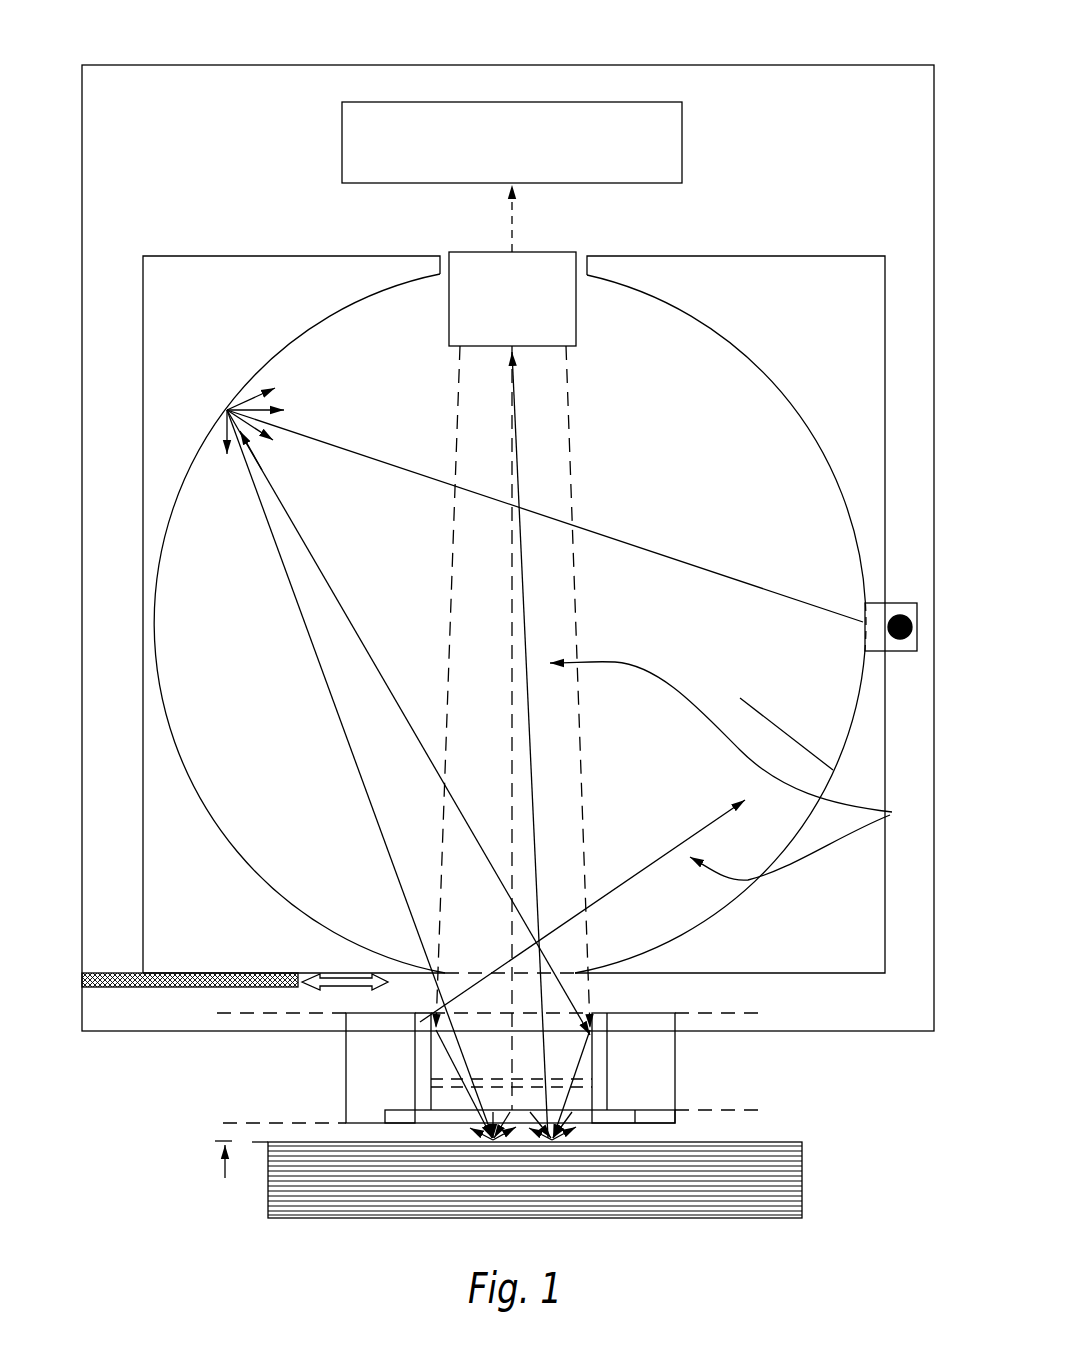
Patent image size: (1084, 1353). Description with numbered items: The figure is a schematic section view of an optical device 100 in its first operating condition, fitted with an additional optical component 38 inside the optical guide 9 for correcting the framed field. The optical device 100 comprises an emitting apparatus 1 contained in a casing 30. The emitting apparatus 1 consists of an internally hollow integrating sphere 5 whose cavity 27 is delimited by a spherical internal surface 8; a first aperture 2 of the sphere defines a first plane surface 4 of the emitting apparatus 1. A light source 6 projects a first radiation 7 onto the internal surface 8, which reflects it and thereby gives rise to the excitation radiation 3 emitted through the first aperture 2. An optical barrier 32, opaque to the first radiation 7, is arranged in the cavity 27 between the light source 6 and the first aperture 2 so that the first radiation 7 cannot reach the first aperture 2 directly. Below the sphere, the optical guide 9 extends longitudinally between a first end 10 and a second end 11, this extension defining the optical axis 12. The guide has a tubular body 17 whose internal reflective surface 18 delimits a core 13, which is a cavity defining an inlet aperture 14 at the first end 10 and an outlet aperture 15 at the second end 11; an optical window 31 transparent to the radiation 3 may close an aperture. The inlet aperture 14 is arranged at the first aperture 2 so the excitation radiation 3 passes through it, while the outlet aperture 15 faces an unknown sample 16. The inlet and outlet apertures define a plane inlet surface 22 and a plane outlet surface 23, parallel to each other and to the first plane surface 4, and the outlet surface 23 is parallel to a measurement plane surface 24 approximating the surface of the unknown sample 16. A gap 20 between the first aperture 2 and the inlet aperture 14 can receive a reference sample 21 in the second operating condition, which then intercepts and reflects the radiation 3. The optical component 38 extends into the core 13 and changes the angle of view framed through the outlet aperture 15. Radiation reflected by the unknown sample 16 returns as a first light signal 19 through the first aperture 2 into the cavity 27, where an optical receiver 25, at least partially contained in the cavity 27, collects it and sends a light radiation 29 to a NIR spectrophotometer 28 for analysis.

The optical device 100 is at (505, 62).
The emitting apparatus 1 is at (880, 253).
The first aperture 2 is at (405, 1004).
The excitation radiation 3 is at (352, 662).
The first plane surface 4 is at (580, 970).
The integrating sphere 5 is at (154, 613).
The light source 6 is at (898, 606).
The first radiation 7 is at (736, 566).
The internal surface 8 is at (262, 366).
The optical guide 9 is at (413, 1067).
The first end 10 is at (650, 1006).
The second end 11 is at (641, 1117).
The optical axis 12 is at (515, 882).
The core 13 is at (505, 1065).
The inlet aperture 14 is at (430, 1062).
The outlet aperture 15 is at (432, 1075).
The unknown sample 16 is at (268, 1183).
The tubular body 17 is at (594, 1087).
The reflective surface 18 is at (603, 1087).
The first light signal 19 is at (760, 783).
The gap 20 is at (509, 1008).
The reference sample 21 is at (172, 988).
The plane inlet surface 22 is at (211, 1014).
The plane outlet surface 23 is at (229, 1121).
The measurement plane surface 24 is at (225, 1178).
The optical receiver 25 is at (582, 298).
The cavity 27 is at (664, 422).
The NIR spectrophotometer 28 is at (688, 143).
The light radiation 29 is at (508, 221).
The casing 30 is at (934, 1032).
The optical window 31 is at (603, 1113).
The optical barrier 32 is at (778, 727).
The optical component 38 is at (443, 1083).